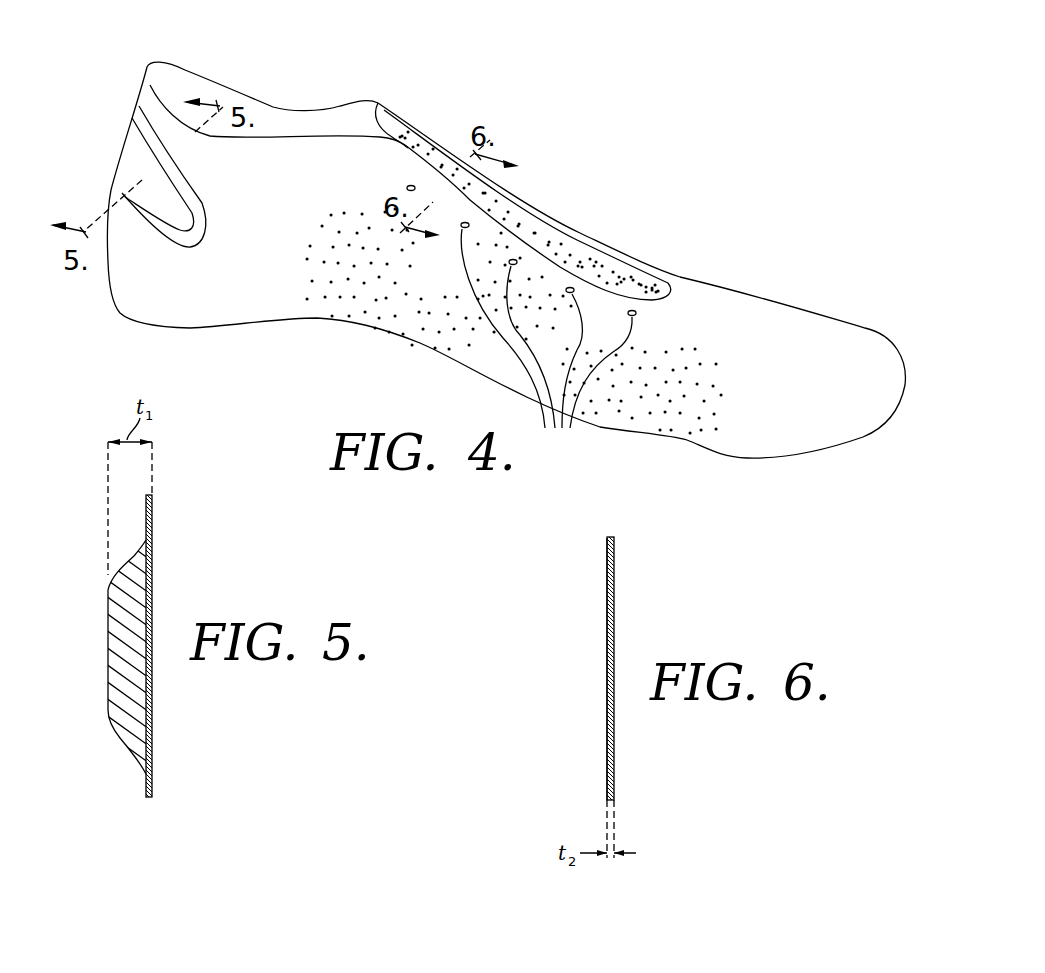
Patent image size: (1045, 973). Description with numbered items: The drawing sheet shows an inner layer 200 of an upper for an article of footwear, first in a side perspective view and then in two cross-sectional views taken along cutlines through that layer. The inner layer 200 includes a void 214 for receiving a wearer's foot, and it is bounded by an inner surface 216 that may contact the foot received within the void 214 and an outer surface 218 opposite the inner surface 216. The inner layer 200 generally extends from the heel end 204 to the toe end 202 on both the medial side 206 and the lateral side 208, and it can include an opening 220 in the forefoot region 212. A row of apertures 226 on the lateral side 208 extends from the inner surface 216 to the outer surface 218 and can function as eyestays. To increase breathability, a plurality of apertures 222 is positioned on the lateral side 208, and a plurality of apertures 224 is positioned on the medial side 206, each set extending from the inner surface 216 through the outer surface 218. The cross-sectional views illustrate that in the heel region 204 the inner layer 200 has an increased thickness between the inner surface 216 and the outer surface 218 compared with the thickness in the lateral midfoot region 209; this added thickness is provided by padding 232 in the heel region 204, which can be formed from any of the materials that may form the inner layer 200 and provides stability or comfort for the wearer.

In FIG. 4, the inner layer 200 is at (688, 180).
In FIG. 4, the toe end 202 is at (853, 347).
In FIG. 4, the heel end 204 is at (122, 195).
In FIG. 4, the medial side 206 is at (686, 278).
In FIG. 4, the lateral side 208 is at (298, 305).
In FIG. 4, the lateral midfoot region 209 is at (412, 250).
In FIG. 4, the forefoot region 212 is at (557, 228).
In FIG. 4, the void 214 is at (208, 80).
In FIG. 4, the inner surface 216 is at (350, 120).
In FIG. 5, the inner surface 216 is at (152, 508).
In FIG. 6, the inner surface 216 is at (614, 562).
In FIG. 4, the outer surface 218 is at (153, 295).
In FIG. 5, the outer surface 218 is at (108, 660).
In FIG. 6, the outer surface 218 is at (607, 580).
In FIG. 4, the opening 220 is at (514, 203).
In FIG. 4, the plurality of apertures 222 is at (733, 368).
In FIG. 4, the plurality of apertures 224 is at (378, 100).
In FIG. 4, the row of apertures 226 is at (407, 188).
In FIG. 5, the padding 232 is at (132, 720).